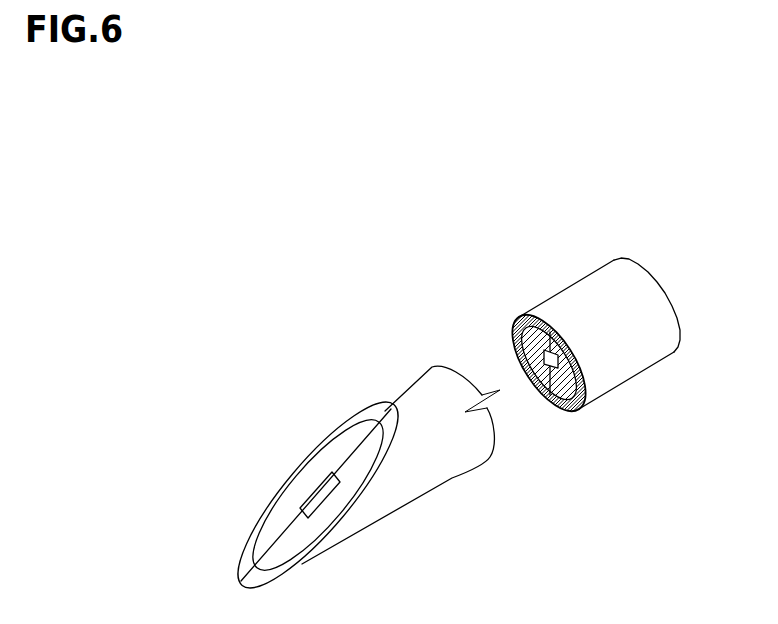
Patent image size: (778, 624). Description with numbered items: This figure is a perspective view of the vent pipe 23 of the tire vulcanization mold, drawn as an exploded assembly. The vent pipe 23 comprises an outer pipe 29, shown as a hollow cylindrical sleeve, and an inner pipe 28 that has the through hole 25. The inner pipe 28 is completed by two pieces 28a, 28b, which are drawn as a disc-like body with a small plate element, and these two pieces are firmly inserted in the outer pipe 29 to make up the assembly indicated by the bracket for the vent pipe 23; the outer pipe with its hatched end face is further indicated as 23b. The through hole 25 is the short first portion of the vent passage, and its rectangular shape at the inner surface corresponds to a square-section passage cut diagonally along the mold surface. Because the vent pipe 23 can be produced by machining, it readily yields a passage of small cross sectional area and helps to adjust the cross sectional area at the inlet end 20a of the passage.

The inlet end 20a is at (318, 493).
The vent pipe 23 is at (568, 213).
The cylindrical member 23b is at (668, 277).
The through hole 25 is at (550, 367).
The inner pipe 28 is at (433, 257).
The piece 28a is at (338, 452).
The piece 28b is at (365, 462).
The outer pipe 29 is at (592, 305).